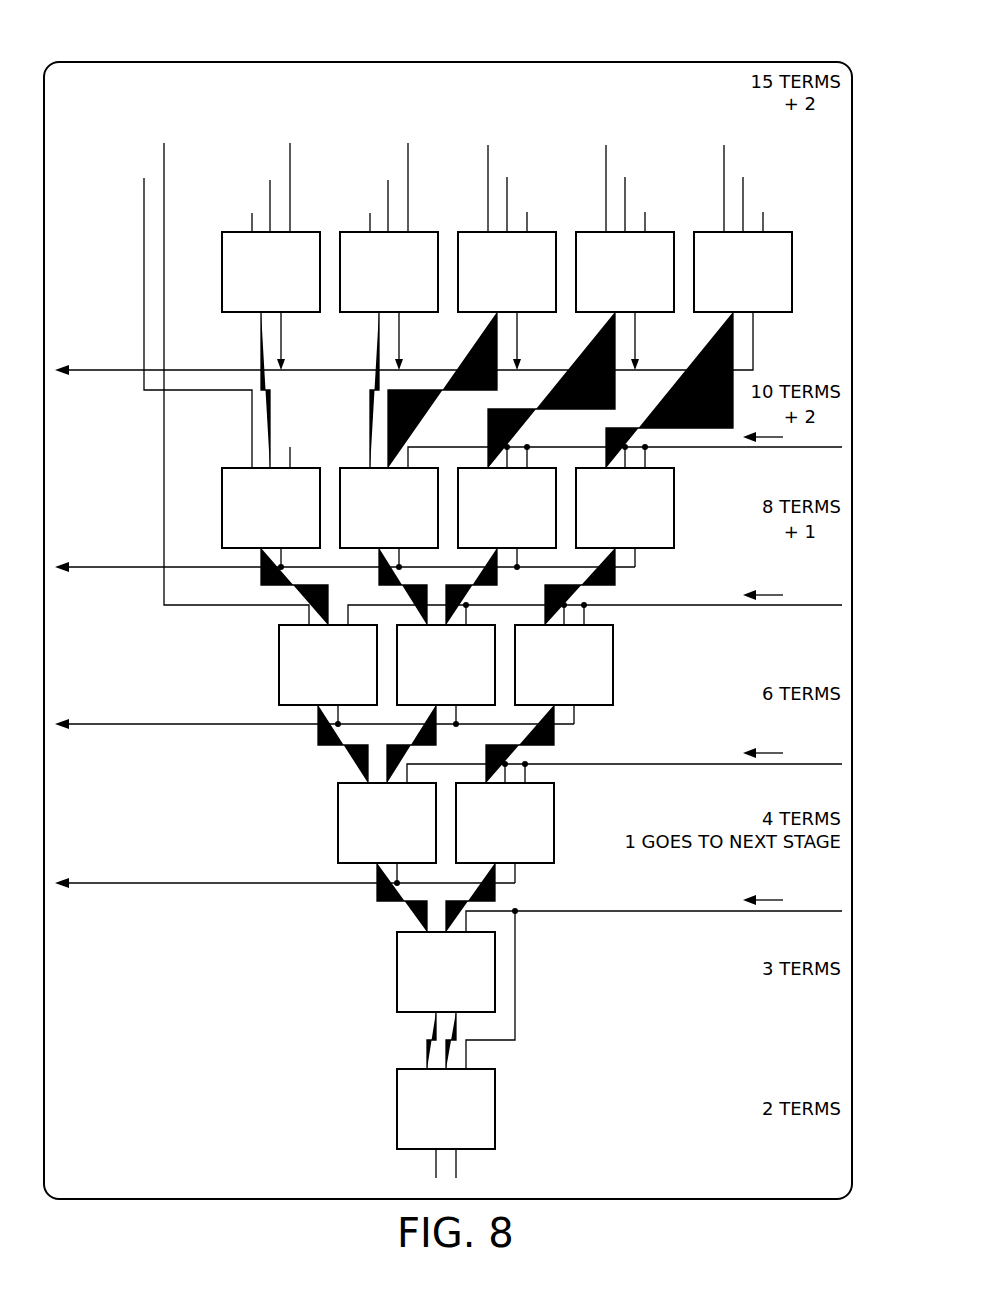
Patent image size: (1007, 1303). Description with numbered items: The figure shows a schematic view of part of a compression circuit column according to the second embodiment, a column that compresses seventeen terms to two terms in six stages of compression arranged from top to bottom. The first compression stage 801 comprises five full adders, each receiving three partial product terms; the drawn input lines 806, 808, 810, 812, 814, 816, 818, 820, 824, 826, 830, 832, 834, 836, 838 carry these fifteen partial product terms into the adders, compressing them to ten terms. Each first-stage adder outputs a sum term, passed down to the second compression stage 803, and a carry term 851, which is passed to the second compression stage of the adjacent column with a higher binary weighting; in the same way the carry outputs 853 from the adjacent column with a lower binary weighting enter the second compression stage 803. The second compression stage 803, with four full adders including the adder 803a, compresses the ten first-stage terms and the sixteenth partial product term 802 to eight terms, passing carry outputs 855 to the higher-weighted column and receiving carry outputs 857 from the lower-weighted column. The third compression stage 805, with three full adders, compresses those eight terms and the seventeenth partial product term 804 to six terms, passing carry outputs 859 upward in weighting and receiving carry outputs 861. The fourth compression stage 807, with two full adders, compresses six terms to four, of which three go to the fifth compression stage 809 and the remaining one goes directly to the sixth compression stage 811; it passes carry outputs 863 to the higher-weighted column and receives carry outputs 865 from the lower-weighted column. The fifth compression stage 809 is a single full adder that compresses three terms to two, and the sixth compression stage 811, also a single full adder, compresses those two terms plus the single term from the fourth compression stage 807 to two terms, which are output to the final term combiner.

The first compression stage 801 is at (468, 99).
The sixteenth partial product term 802 is at (143, 185).
The seventeenth partial product term 804 is at (163, 150).
The input term 806 is at (251, 217).
The input term 808 is at (269, 185).
The input term 810 is at (289, 150).
The input term 812 is at (369, 217).
The input term 814 is at (387, 185).
The input term 816 is at (407, 150).
The input term 818 is at (489, 153).
The input term 820 is at (508, 188).
The input term 824 is at (528, 223).
The input term 826 is at (607, 153).
The input term 830 is at (626, 188).
The input term 832 is at (646, 223).
The input term 834 is at (725, 153).
The input term 836 is at (744, 188).
The input term 838 is at (764, 223).
The second compression stage 803 is at (128, 483).
The full adder 803a is at (228, 466).
The third compression stage 805 is at (161, 656).
The fourth compression stage 807 is at (161, 818).
The fifth compression stage 809 is at (160, 985).
The sixth compression stage 811 is at (160, 1124).
The carry term 851 is at (211, 60).
The carry outputs 853 is at (716, 449).
The carry outputs 855 is at (79, 565).
The carry outputs 857 is at (812, 603).
The carry outputs 859 is at (79, 722).
The carry outputs 861 is at (812, 762).
The carry outputs 863 is at (79, 881).
The carry outputs 865 is at (812, 909).